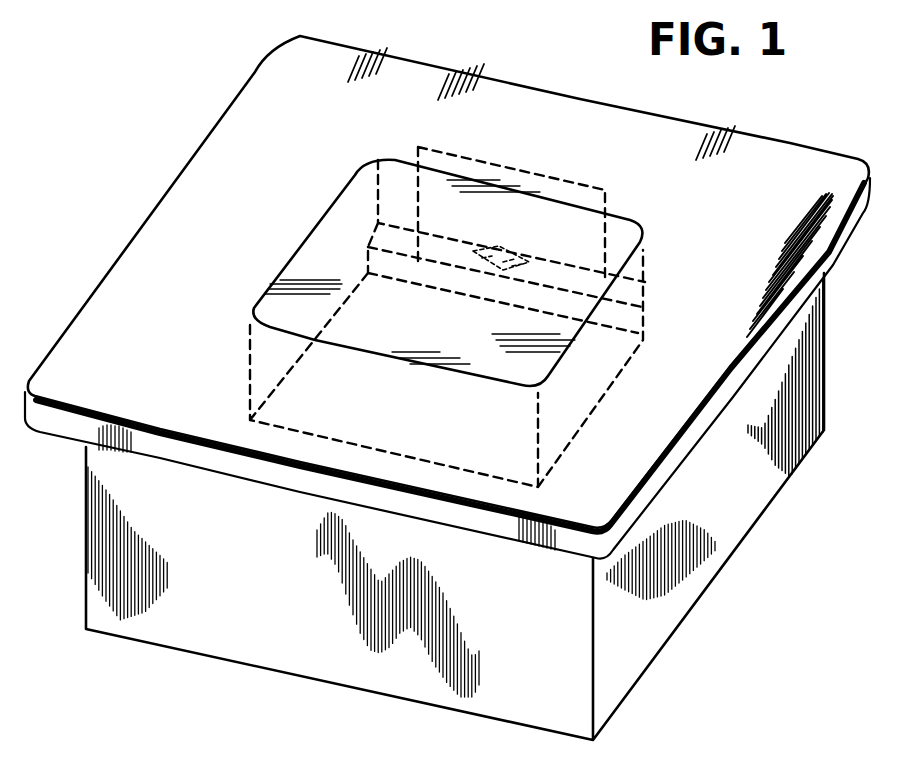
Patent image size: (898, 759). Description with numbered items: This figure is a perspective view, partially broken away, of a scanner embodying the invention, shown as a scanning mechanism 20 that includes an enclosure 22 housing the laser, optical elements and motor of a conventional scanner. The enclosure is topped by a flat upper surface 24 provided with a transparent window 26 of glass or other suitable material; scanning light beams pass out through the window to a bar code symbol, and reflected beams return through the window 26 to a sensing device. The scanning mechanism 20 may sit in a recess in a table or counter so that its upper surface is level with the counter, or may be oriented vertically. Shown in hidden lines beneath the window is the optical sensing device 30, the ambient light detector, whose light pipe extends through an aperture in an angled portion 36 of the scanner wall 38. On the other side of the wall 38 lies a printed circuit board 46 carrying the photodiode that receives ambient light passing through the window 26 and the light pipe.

The scanning mechanism 20 is at (150, 150).
The enclosure 22 is at (200, 645).
The flat upper surface 24 is at (498, 96).
The transparent window 26 is at (252, 312).
The optical sensing device 30 is at (498, 247).
The angled portion 36 is at (374, 228).
The scanner wall 38 is at (648, 268).
The printed circuit board 46 is at (530, 173).